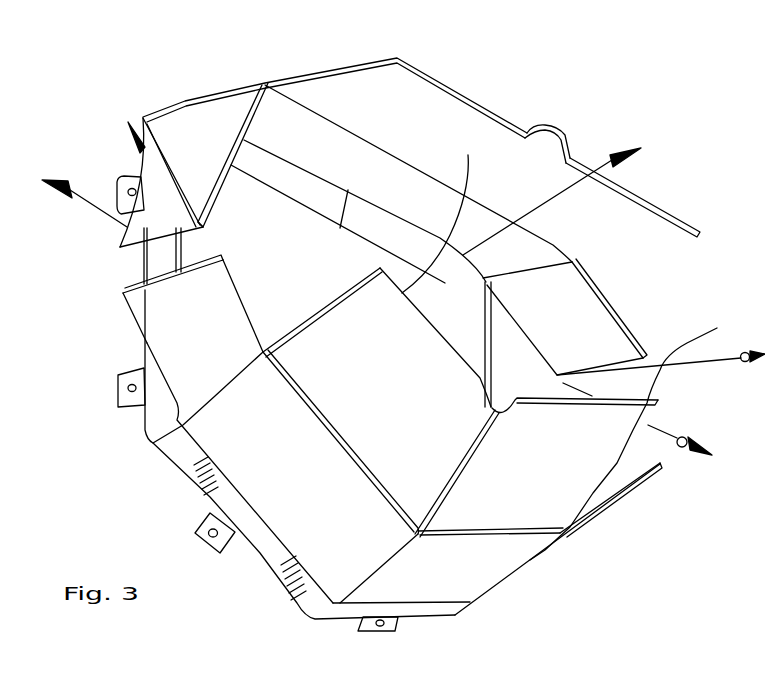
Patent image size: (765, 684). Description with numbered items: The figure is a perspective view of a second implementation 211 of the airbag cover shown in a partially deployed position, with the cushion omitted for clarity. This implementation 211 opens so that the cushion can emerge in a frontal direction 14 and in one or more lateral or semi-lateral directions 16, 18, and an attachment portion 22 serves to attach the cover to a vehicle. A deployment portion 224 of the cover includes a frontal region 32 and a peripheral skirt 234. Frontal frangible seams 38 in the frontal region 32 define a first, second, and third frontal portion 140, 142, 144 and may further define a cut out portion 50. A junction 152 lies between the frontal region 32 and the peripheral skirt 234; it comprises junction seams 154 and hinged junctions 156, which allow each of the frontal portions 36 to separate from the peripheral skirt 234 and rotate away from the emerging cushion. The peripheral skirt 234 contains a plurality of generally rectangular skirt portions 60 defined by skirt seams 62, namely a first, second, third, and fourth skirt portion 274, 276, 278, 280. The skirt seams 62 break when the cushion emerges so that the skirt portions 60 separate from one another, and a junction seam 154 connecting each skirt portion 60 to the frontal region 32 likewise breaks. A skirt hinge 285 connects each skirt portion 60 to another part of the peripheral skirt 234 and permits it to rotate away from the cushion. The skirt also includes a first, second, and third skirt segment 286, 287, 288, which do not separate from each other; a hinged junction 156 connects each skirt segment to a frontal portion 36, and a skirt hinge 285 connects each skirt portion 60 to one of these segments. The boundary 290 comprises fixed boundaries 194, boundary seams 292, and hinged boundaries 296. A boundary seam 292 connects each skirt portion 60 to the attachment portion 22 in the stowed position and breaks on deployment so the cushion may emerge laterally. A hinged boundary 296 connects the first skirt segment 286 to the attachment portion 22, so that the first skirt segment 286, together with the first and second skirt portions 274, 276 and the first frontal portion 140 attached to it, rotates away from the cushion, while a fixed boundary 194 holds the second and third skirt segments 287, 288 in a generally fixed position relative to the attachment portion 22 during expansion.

The second implementation 211 is at (64, 80).
The frontal direction 14 is at (535, 210).
The lateral direction 16 is at (78, 200).
The lateral direction 18 is at (165, 182).
The attachment portion 22 is at (160, 115).
The frontal region 32 is at (527, 540).
The frontal portion 36 is at (450, 106).
The frontal frangible seam 38 is at (722, 331).
The cut out portion 50 is at (563, 132).
The skirt portion 60 is at (217, 175).
The skirt seam 62 is at (203, 255).
The first frontal portion 140 is at (643, 208).
The second frontal portion 142 is at (302, 382).
The third frontal portion 144 is at (470, 522).
The junction 152 is at (362, 476).
The junction seam 154 is at (290, 107).
The hinged junction 156 is at (403, 165).
The fixed boundary 194 is at (243, 556).
The deployment portion 224 is at (233, 95).
The peripheral skirt 234 is at (277, 587).
The first skirt portion 274 is at (143, 118).
The second skirt portion 276 is at (530, 338).
The third skirt portion 278 is at (147, 343).
The fourth skirt portion 280 is at (657, 469).
The skirt hinge 285 is at (188, 107).
The first skirt segment 286 is at (340, 228).
The second skirt segment 287 is at (197, 497).
The third skirt segment 288 is at (340, 612).
The boundary 290 is at (193, 466).
The boundary seam 292 is at (147, 163).
The hinged boundary 296 is at (310, 178).